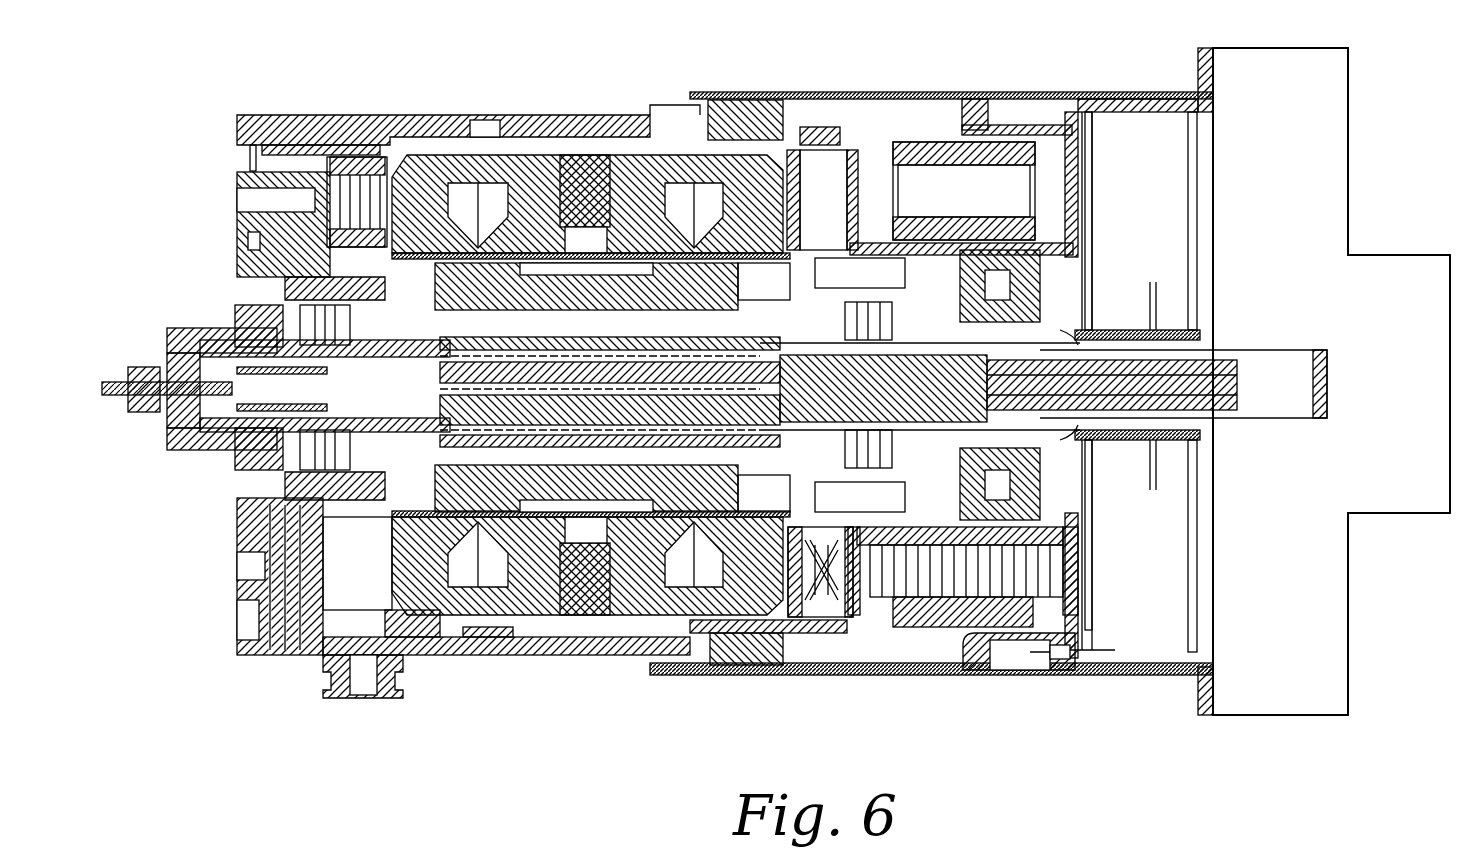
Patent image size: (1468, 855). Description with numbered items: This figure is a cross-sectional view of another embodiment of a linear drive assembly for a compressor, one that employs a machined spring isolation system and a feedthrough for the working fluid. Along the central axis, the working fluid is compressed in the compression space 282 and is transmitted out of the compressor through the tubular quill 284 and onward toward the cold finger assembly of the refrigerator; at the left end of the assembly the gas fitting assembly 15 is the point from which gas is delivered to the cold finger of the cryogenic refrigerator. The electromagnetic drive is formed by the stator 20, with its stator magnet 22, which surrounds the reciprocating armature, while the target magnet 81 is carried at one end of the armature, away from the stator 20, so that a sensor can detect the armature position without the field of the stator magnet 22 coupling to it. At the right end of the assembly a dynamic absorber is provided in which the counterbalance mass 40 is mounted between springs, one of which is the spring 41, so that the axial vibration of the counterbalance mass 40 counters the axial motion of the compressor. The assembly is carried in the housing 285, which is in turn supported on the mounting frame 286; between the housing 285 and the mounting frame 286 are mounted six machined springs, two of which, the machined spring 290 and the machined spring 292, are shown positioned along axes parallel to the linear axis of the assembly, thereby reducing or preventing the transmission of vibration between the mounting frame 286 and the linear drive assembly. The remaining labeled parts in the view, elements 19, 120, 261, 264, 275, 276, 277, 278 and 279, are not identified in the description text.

The gas fitting assembly 15 is at (104, 366).
The fitting 19 is at (358, 697).
The stator 20 is at (532, 157).
The stator magnet 22 is at (587, 622).
The counterbalance mass 40 is at (950, 136).
The spring 41 is at (935, 188).
The target magnet 81 is at (1196, 408).
The cavity 120 is at (348, 514).
The coil 261 is at (793, 650).
The winding 264 is at (548, 512).
The housing wall 275 is at (1018, 90).
The plates 276 is at (1185, 217).
The chamber 277 is at (1145, 262).
The support block 278 is at (1284, 562).
The connector 279 is at (1100, 662).
The compression space 282 is at (760, 383).
The tubular quill 284 is at (425, 388).
The housing 285 is at (226, 234).
The mounting frame 286 is at (357, 115).
The machined spring 290 is at (352, 200).
The machined spring 292 is at (858, 622).